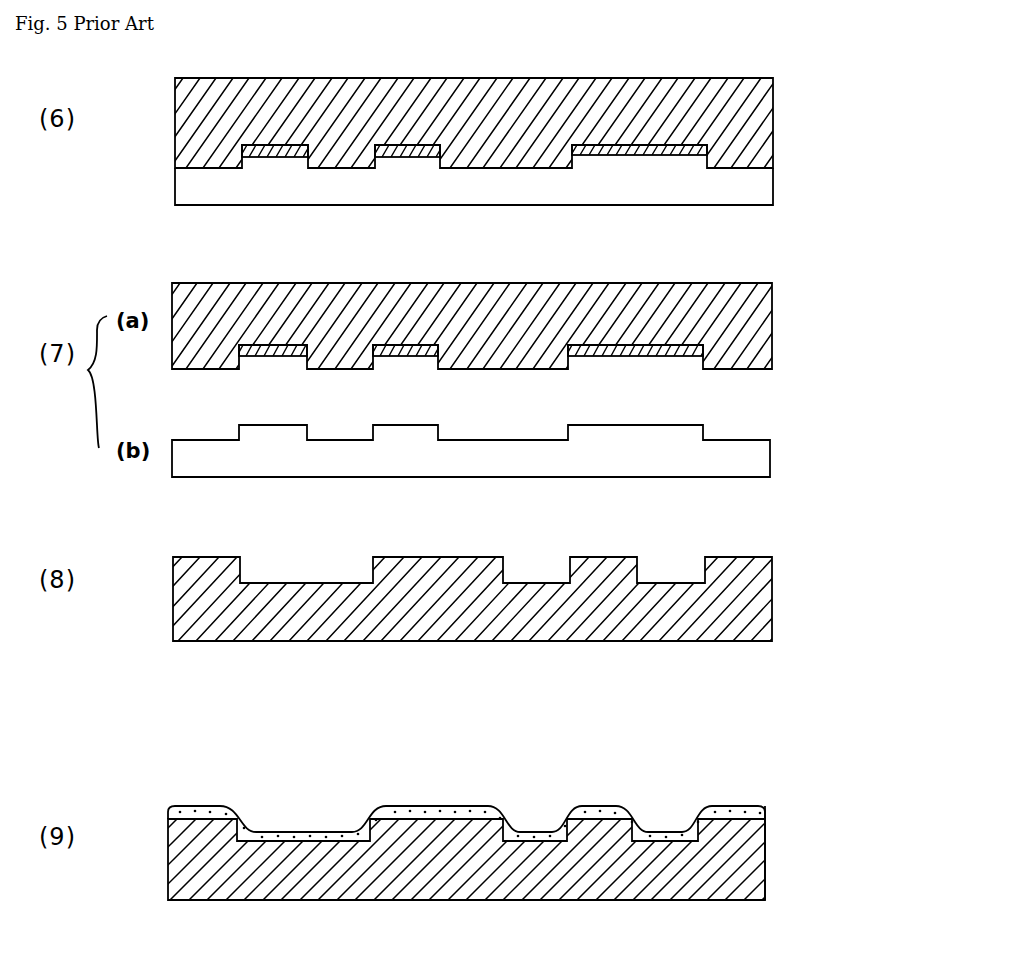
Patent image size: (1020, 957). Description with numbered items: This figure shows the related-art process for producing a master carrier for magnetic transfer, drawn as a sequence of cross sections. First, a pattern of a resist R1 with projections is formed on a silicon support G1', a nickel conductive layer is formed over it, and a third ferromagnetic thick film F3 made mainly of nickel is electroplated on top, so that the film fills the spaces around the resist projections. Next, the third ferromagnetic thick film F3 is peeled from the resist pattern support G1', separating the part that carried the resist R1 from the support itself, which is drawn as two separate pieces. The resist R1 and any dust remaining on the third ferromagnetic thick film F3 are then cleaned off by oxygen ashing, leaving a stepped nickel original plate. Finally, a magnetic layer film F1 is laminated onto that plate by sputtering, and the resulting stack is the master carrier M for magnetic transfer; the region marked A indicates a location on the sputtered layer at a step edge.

The third ferromagnetic thick film F3 is at (773, 101).
The resist R1 is at (700, 147).
The silicon support G1' is at (525, 322).
The magnetic layer film F1 is at (765, 812).
The master carrier for magnetic transfer M is at (857, 795).
The rounded corner defect region A is at (366, 805).